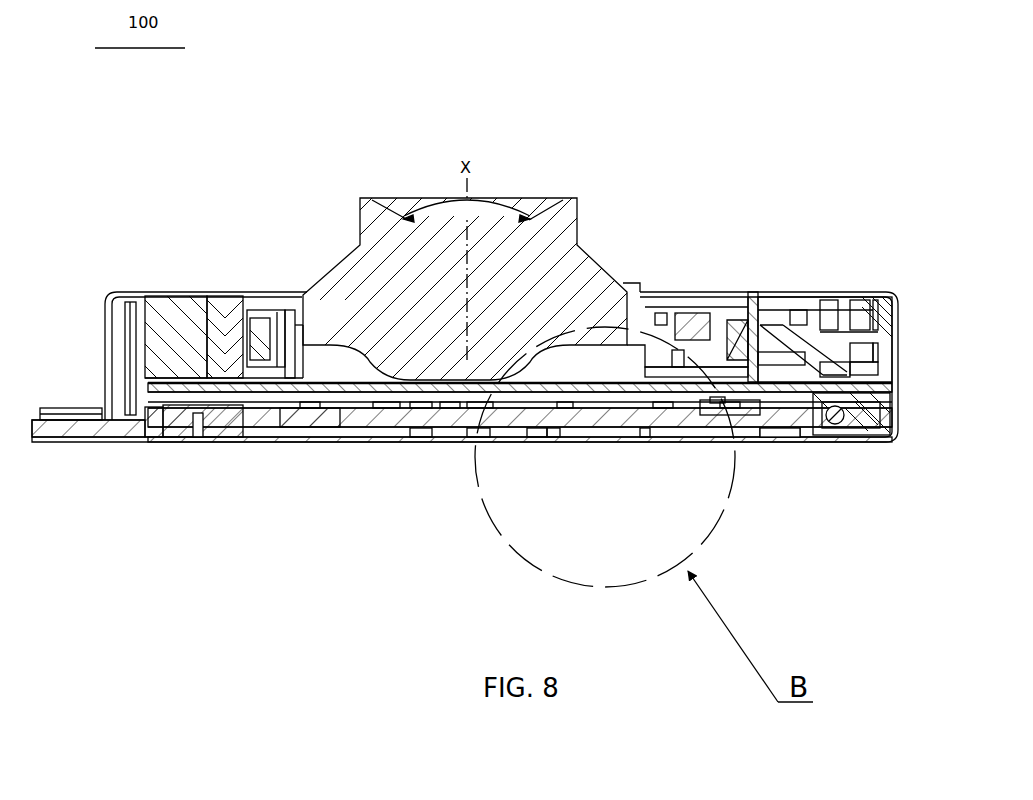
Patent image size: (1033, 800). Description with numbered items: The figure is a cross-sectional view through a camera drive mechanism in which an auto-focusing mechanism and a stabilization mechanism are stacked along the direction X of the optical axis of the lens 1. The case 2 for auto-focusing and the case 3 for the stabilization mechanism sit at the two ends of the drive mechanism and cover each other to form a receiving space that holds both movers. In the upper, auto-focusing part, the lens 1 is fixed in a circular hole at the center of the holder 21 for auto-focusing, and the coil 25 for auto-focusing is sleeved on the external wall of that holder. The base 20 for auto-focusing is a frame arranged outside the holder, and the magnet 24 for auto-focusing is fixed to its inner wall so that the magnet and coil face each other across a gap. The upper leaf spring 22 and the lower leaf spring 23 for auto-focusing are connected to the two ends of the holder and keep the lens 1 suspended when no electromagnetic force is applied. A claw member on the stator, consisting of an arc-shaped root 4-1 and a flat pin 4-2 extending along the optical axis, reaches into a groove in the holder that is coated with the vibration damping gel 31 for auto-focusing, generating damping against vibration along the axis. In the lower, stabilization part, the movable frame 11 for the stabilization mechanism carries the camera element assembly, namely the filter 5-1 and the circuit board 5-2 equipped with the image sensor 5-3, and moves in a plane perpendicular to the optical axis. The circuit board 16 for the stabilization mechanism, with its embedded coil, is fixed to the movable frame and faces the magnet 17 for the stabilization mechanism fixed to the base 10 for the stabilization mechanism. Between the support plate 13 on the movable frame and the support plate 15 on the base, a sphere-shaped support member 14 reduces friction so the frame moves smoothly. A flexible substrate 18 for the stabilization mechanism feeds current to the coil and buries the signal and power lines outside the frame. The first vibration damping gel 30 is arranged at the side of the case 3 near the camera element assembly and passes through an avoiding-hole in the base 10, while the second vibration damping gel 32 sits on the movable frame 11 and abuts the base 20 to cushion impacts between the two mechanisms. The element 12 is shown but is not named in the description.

The lens 1 is at (546, 240).
The case for auto-focusing 2 is at (104, 322).
The case for the stabilization mechanism 3 is at (658, 444).
The root of the claw member 4-1 is at (693, 288).
The pin of the claw member 4-2 is at (677, 307).
The filter 5-1 is at (553, 395).
The circuit board 5-2 is at (624, 420).
The image sensor 5-3 is at (502, 400).
The base for the stabilization mechanism 10 is at (786, 428).
The movable frame for the stabilization mechanism 11 is at (729, 405).
The flexible circuit board 12 is at (200, 396).
The support plate (for the movable frame) of the support member for the stabilizatio 13 is at (852, 404).
The support member for the stabilization mechanism 14 is at (846, 412).
The support plate (for the base) of the support member for the stabilization mechani 15 is at (840, 430).
The circuit board for the stabilization mechanism 16 is at (227, 398).
The magnet for the stabilization mechanism 17 is at (210, 420).
The flexible substrate for the stabilization mechanism 18 is at (124, 373).
The base for auto-focusing 20 is at (881, 311).
The holder for auto-focusing 21 is at (283, 333).
The upper leaf spring for auto-focusing 22 is at (266, 312).
The lower leaf spring for auto-focusing 23 is at (262, 362).
The magnet for auto-focusing 24 is at (221, 316).
The coil for auto-focusing 25 is at (736, 338).
The first vibration damping gel for the stabilization mechanism 30 is at (308, 430).
The vibration damping gel for auto-focusing 31 is at (700, 317).
The second vibration damping gel for the stabilization mechanism 32 is at (852, 378).